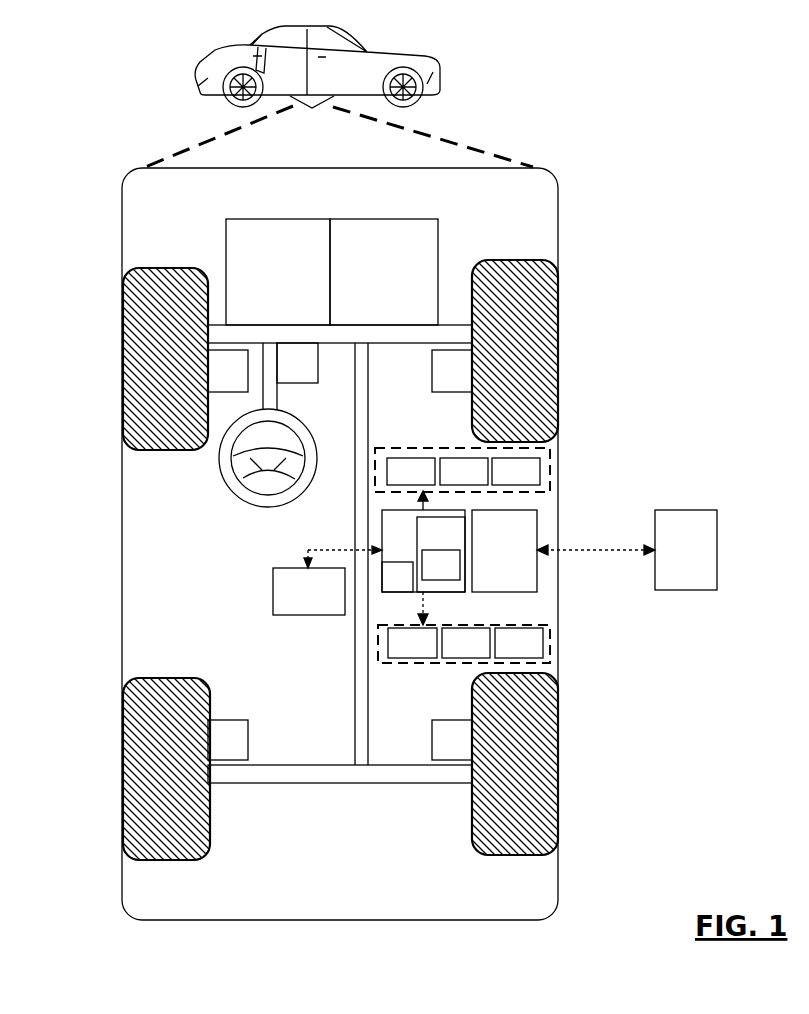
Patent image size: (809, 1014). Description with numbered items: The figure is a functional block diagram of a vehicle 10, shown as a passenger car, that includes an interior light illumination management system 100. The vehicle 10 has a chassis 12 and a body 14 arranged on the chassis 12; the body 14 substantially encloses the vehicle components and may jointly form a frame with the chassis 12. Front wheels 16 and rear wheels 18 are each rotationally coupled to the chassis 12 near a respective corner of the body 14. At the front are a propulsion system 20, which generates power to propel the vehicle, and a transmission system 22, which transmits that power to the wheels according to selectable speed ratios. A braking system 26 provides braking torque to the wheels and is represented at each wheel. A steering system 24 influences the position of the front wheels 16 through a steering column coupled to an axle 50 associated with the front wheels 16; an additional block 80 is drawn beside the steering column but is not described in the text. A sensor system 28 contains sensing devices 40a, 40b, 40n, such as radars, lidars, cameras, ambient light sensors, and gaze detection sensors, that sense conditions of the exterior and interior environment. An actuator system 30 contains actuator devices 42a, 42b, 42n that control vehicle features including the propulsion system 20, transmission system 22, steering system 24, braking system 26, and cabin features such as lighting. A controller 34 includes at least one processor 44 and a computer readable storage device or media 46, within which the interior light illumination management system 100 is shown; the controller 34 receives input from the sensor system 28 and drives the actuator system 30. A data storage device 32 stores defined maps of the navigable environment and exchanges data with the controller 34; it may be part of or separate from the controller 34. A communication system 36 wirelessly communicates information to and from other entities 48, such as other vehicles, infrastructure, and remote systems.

The vehicle 10 is at (193, 78).
The chassis 12 is at (352, 705).
The body 14 is at (122, 545).
The front wheels 16 is at (160, 268).
The rear wheels 18 is at (180, 860).
The propulsion system 20 is at (278, 272).
The transmission system 22 is at (384, 272).
The steering system 24 is at (202, 483).
The braking system 26 is at (340, 555).
The sensor system 28 is at (400, 450).
The actuator system 30 is at (385, 664).
The data storage device 32 is at (309, 591).
The controller 34 is at (423, 551).
The communication system 36 is at (504, 551).
The sensing device 40a is at (411, 471).
The sensing device 40b is at (464, 471).
The sensing device 40n is at (516, 471).
The actuator device 42a is at (412, 643).
The actuator device 42b is at (466, 643).
The actuator device 42n is at (519, 643).
The processor 44 is at (397, 577).
The computer readable storage device or media 46 is at (441, 554).
The other entities 48 is at (686, 550).
The axle 50 is at (393, 344).
The steering column module 80 is at (297, 363).
The interior light illumination management system 100 is at (441, 565).